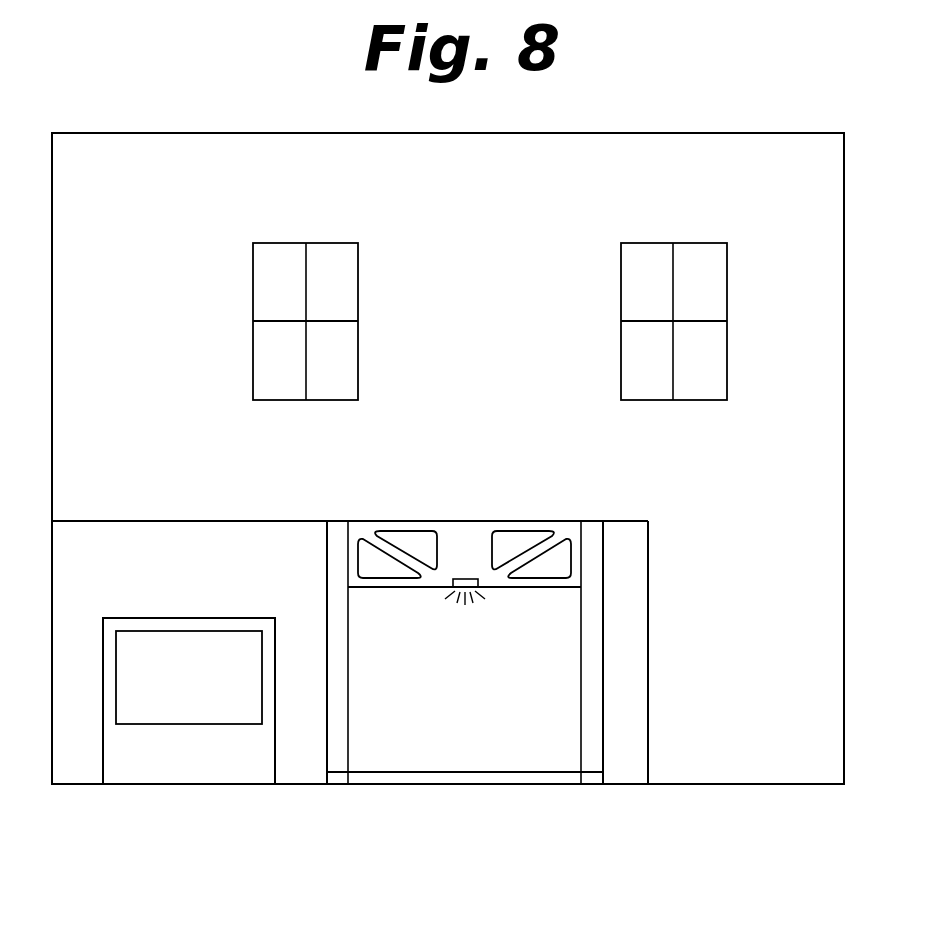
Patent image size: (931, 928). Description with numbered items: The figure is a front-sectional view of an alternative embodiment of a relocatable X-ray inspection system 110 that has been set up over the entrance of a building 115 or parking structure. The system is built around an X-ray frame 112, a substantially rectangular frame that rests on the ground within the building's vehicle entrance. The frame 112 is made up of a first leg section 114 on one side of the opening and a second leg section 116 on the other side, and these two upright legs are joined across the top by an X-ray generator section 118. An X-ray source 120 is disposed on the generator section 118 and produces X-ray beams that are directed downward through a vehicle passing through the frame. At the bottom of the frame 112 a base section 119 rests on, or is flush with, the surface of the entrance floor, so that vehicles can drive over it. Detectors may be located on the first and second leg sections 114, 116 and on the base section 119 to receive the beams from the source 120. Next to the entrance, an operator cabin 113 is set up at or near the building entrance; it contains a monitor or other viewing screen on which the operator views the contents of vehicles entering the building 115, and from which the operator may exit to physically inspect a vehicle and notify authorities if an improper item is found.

The X-ray inspection system 110 is at (608, 803).
The X-ray frame 112 is at (458, 618).
The operator cabin 113 is at (210, 625).
The first leg section 114 is at (340, 730).
The building 115 is at (475, 440).
The second leg section 116 is at (590, 707).
The X-ray generator section 118 is at (428, 578).
The base section 119 is at (433, 778).
The X-ray source 120 is at (474, 583).